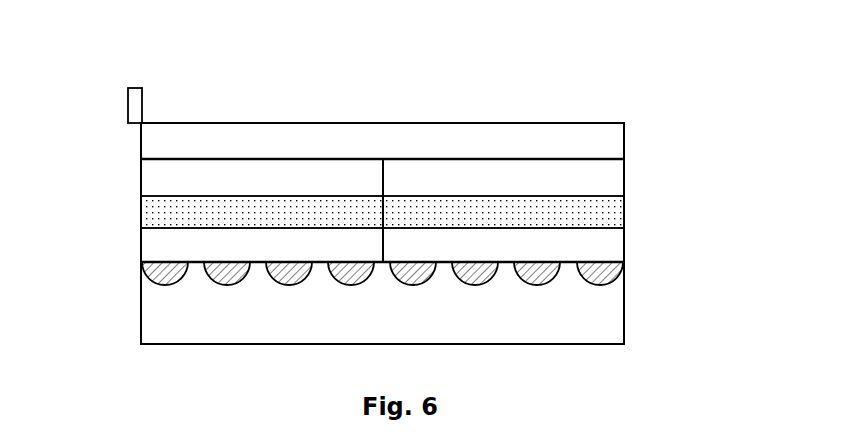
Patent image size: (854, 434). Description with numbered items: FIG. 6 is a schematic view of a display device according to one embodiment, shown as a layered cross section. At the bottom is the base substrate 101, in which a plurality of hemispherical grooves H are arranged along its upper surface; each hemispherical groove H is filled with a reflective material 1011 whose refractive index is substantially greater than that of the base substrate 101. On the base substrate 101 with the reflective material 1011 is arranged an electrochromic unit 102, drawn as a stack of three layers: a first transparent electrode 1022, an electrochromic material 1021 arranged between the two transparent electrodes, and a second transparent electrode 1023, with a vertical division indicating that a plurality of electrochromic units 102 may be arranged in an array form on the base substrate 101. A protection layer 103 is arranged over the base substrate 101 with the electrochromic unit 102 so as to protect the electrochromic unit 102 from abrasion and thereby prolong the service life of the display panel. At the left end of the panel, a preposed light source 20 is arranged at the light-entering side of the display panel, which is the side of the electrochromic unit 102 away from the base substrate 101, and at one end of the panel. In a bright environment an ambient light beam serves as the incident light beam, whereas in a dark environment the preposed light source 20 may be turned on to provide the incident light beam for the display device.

The preposed light source 20 is at (119, 107).
The electrochromic unit 102 is at (287, 150).
The electrochromic material 1021 is at (468, 205).
The first transparent electrode 1022 is at (418, 230).
The second transparent electrode 1023 is at (523, 162).
The protection layer 103 is at (633, 149).
The base substrate 101 is at (633, 314).
The reflective material 1011 is at (601, 282).
The hemispherical groove H is at (604, 294).